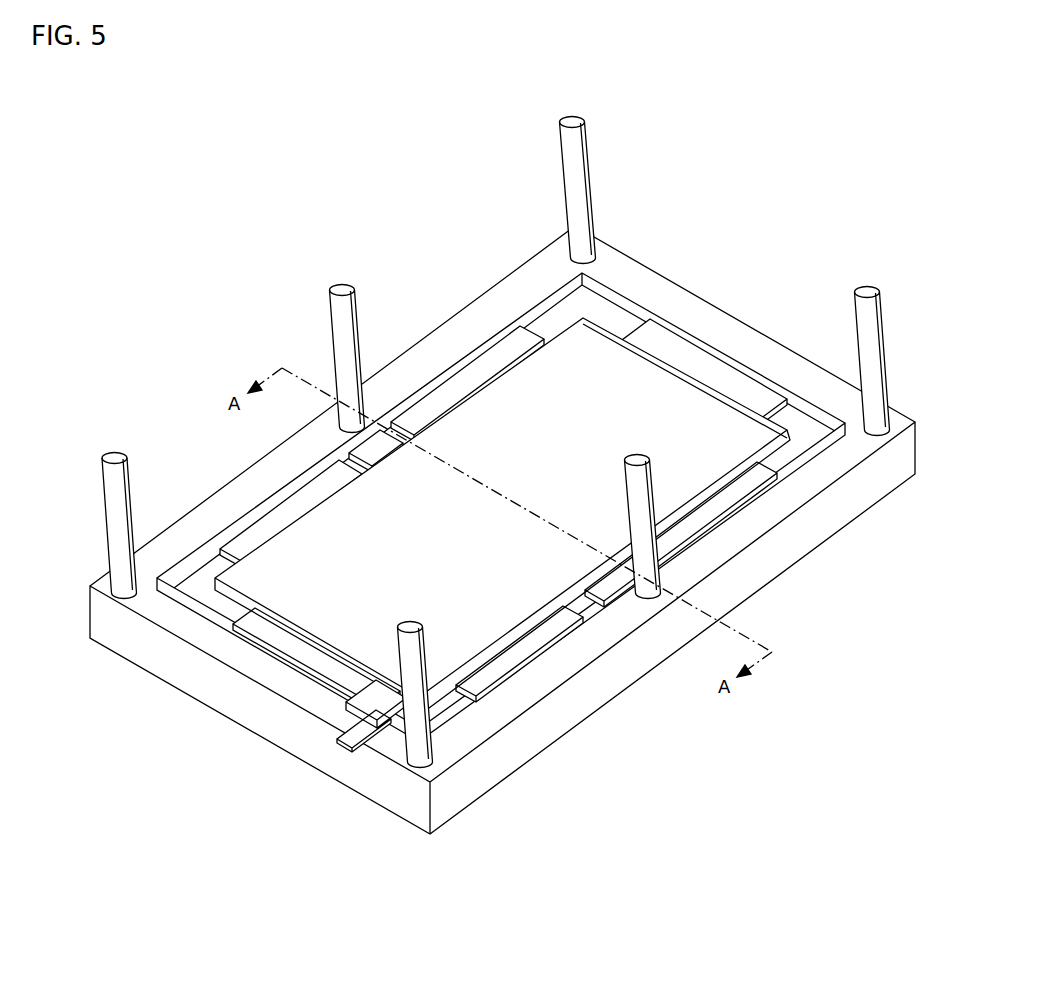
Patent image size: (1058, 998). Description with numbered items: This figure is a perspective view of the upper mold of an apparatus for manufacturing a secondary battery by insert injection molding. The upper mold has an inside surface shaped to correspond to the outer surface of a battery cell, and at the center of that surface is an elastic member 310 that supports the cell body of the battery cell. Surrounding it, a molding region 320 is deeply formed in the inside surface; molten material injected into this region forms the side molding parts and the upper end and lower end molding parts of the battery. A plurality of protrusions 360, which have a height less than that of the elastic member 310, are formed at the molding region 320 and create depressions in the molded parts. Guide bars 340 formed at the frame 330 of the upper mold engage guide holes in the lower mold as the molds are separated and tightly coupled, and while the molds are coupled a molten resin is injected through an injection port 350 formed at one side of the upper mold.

The elastic member 310 is at (663, 383).
The molding region 320 is at (588, 300).
The frame 330 is at (768, 572).
The guide bar 340 is at (433, 745).
The injection port 350 is at (347, 747).
The protrusion 360 is at (472, 373).